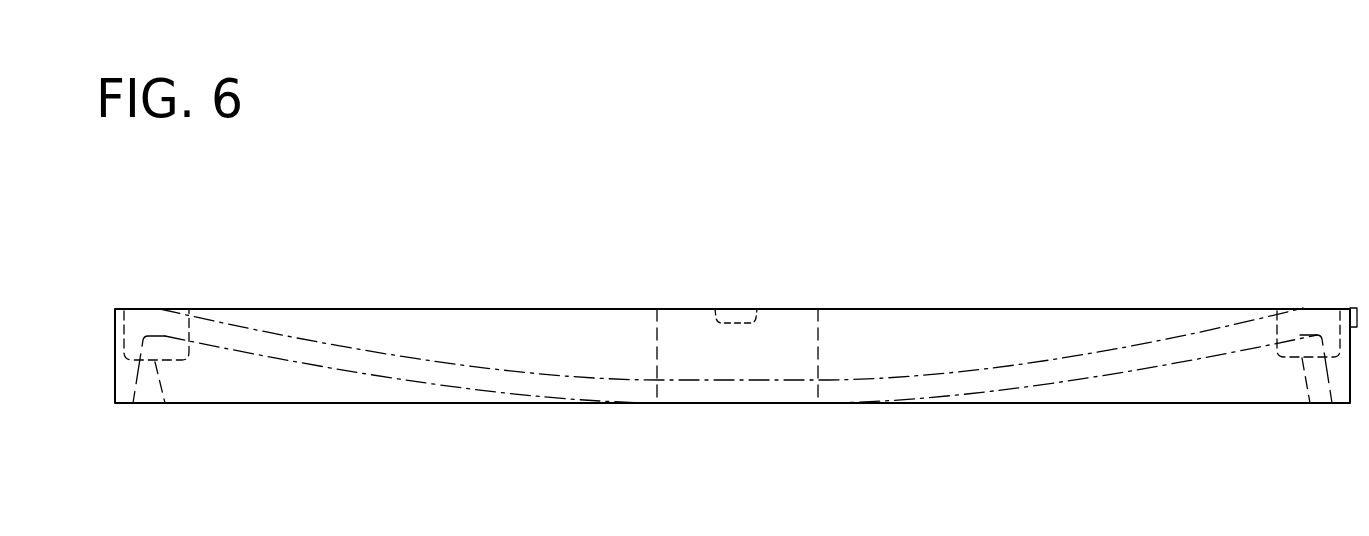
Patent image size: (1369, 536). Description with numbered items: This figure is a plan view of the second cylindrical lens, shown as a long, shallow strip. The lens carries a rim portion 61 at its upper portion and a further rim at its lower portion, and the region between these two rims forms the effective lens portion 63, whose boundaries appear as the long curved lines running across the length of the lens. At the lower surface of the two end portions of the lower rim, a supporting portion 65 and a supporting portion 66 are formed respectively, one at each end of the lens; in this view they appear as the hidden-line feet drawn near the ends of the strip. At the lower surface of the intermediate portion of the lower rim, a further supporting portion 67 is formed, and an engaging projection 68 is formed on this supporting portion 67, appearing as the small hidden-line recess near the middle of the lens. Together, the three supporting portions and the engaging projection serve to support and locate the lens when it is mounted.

The rim portion 61 is at (1189, 383).
The effective lens portion 63 is at (318, 370).
The supporting portion 65 is at (1310, 405).
The supporting portion 66 is at (166, 405).
The supporting portion 67 is at (656, 335).
The engaging projection 68 is at (720, 320).